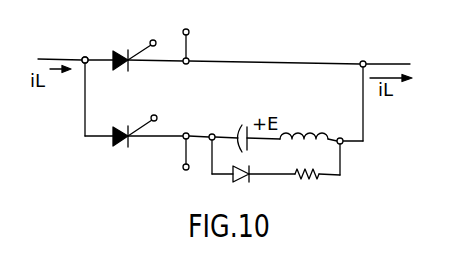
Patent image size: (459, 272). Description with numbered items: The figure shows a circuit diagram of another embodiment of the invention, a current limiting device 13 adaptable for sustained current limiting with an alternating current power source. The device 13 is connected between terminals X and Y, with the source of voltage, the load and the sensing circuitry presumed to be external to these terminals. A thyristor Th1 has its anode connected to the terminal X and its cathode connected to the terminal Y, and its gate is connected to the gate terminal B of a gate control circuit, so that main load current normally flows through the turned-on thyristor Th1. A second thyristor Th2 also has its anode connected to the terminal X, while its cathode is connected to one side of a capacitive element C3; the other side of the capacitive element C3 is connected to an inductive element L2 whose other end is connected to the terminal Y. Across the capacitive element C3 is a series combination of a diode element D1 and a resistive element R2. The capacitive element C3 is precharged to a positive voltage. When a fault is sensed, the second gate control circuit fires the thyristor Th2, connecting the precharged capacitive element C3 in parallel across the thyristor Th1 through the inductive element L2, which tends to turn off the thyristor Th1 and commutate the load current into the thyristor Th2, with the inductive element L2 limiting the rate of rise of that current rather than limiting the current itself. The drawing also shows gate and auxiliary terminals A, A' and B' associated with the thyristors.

The current limiting device 13 is at (265, 44).
The terminal X is at (82, 56).
The terminal Y is at (363, 60).
The thyristor Th1 is at (121, 50).
The second thyristor Th2 is at (122, 127).
The gate terminal B is at (143, 34).
The auxiliary terminal B' is at (201, 43).
The gate terminal of Th2 A is at (155, 105).
The auxiliary terminal A' is at (167, 155).
The capacitive element C3 is at (237, 121).
The inductive element L2 is at (297, 144).
The diode element D1 is at (242, 182).
The resistive element R2 is at (309, 183).